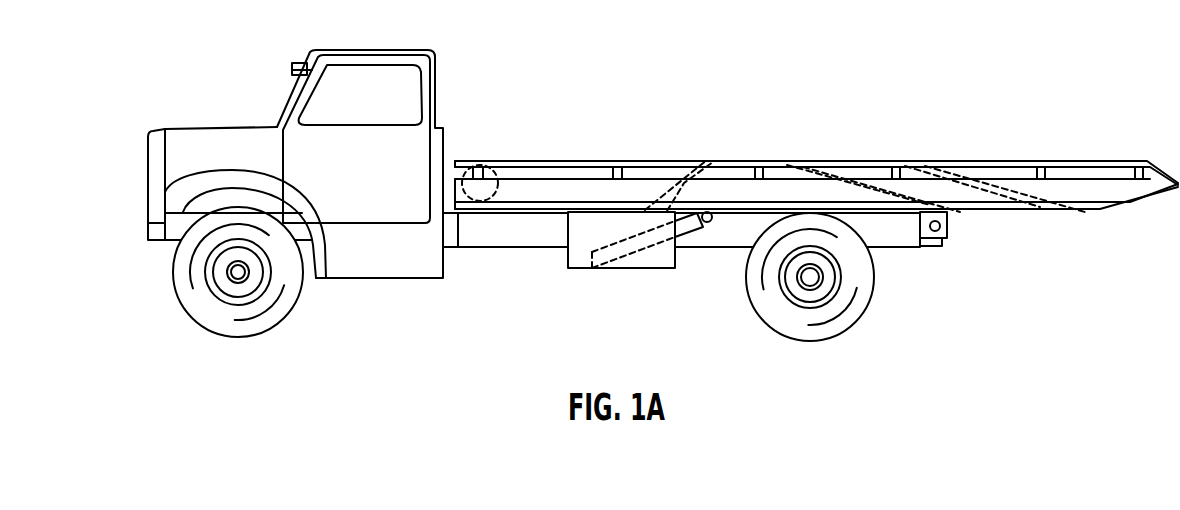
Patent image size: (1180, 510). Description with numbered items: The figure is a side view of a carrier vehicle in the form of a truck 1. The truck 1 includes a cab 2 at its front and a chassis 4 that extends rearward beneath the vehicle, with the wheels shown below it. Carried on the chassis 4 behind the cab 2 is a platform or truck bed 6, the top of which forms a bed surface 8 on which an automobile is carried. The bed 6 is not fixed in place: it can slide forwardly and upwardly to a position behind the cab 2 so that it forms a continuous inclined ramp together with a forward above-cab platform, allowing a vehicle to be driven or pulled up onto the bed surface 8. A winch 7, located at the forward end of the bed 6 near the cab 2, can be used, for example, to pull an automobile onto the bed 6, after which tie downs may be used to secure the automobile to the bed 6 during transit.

The truck 1 is at (250, 124).
The cab 2 is at (434, 52).
The chassis 4 is at (537, 248).
The platform or truck bed 6 is at (772, 178).
The winch 7 is at (480, 163).
The bed surface 8 is at (1010, 162).